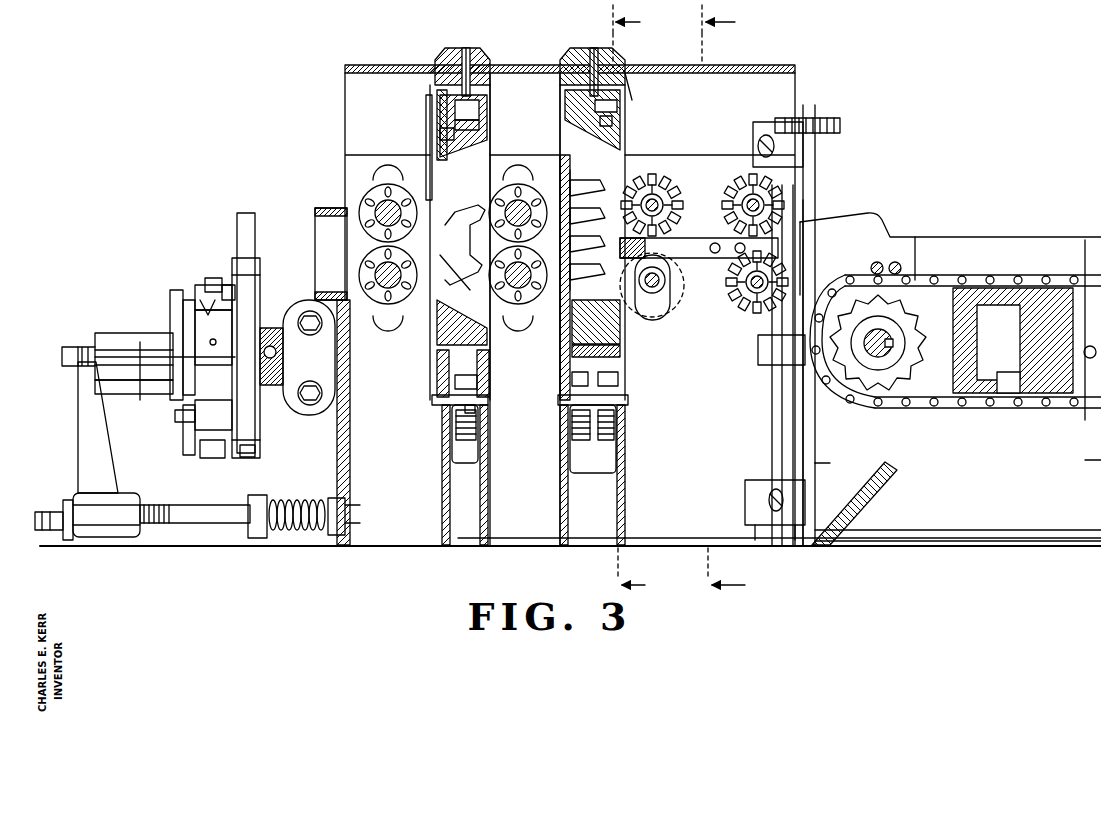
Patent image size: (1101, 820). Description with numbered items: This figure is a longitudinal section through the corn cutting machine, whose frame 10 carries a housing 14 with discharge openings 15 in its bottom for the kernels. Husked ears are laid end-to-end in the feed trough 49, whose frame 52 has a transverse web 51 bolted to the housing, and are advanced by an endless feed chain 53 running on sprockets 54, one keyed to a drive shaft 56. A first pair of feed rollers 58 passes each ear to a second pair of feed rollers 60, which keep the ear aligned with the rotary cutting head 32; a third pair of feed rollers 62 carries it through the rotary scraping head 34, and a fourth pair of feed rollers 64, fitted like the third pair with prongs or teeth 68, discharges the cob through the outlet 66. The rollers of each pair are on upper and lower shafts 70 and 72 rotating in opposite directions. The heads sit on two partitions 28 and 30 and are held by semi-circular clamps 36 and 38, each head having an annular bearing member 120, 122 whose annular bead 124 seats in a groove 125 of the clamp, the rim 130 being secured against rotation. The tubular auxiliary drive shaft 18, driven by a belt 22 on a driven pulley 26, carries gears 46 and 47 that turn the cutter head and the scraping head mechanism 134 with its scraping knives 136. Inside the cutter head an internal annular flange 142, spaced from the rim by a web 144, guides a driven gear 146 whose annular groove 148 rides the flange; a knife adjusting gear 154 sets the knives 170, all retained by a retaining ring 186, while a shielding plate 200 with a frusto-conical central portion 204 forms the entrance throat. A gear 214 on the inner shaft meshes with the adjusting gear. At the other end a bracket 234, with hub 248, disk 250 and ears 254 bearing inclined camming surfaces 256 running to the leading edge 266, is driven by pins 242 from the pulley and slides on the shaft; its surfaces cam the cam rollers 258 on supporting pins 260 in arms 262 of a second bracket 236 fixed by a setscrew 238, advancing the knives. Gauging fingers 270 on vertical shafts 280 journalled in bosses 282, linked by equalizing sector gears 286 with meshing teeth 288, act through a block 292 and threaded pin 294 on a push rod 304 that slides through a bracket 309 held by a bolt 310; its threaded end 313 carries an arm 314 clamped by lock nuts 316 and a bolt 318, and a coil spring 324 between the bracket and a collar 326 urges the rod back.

The frame 10 is at (335, 489).
The housing 14 is at (517, 65).
The discharge opening 15 is at (690, 548).
The auxiliary drive shaft 18 is at (282, 352).
The belt 22 is at (256, 452).
The driven pulley 26 is at (262, 440).
The partition 28 is at (625, 489).
The partition 30 is at (480, 478).
The rotary cutting head 32 is at (620, 130).
The rotary scraping head 34 is at (475, 140).
The semi-circular clamp 36 is at (570, 50).
The semi-circular clamp 38 is at (445, 50).
The gear 46 is at (612, 424).
The gear 47 is at (460, 430).
The feed trough 49 is at (1012, 235).
The transverse web 51 is at (820, 460).
The frame of the feed trough 52 is at (962, 470).
The endless feed chain 53 is at (1048, 285).
The sprocket 54 is at (895, 400).
The drive shaft 56 is at (885, 335).
The feed rollers 58 is at (785, 200).
The feed rollers 60 is at (665, 190).
The feed rollers 62 is at (547, 243).
The feed rollers 64 is at (375, 238).
The outlet 66 is at (317, 226).
The prongs or teeth 68 is at (375, 197).
The upper shaft 70 is at (512, 205).
The lower shaft 72 is at (378, 275).
The annular bearing member 120 is at (625, 85).
The annular bearing member 122 is at (428, 68).
The annular bead 124 is at (464, 48).
The groove 125 is at (468, 48).
The rim 130 is at (480, 92).
The mechanism of the scraping head 134 is at (428, 130).
The scraping knives 136 is at (464, 247).
The internal annular flange 142 is at (482, 128).
The web 144 is at (480, 118).
The driven gear 146 is at (618, 108).
The annular groove 148 is at (620, 122).
The knife adjusting gear 154 is at (570, 362).
The knives 170 is at (592, 212).
The retaining ring 186 is at (570, 334).
The shielding plate 200 is at (622, 400).
The frusto-conical central portion 204 is at (622, 342).
The gear 214 is at (575, 430).
The bracket 234 is at (108, 333).
The bracket 236 is at (232, 430).
The setscrew 238 is at (215, 343).
The pin 242 is at (195, 355).
The hub 248 is at (140, 374).
The disk 250 is at (172, 411).
The ear 254 is at (200, 292).
The inclined camming surface 256 is at (190, 425).
The cam roller 258 is at (205, 285).
The supporting pin 260 is at (210, 340).
The arm 262 is at (205, 310).
The edge 266 is at (178, 425).
The gauging fingers 270 is at (710, 243).
The vertical shaft 280 is at (775, 340).
The boss 282 is at (770, 360).
The equalizing sector gear 286 is at (768, 122).
The teeth 288 is at (842, 126).
The block 292 is at (750, 504).
The threaded pin 294 is at (770, 498).
The push rod 304 is at (205, 523).
The bracket 309 is at (340, 522).
The bolt 310 is at (340, 505).
The threaded end 313 is at (55, 512).
The arm 314 is at (78, 415).
The lock nuts 316 is at (70, 503).
The bolt 318 is at (62, 356).
The coil spring 324 is at (312, 540).
The collar 326 is at (262, 538).